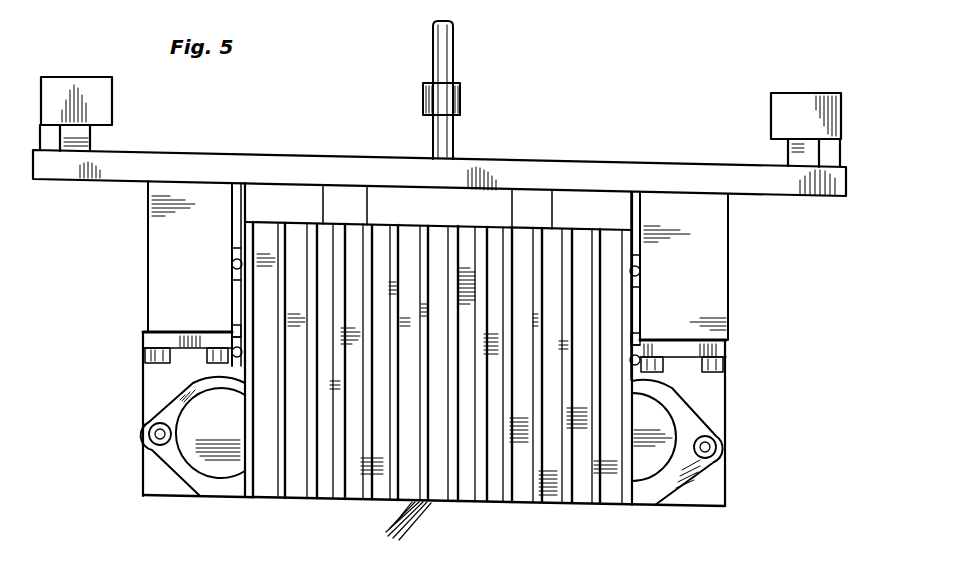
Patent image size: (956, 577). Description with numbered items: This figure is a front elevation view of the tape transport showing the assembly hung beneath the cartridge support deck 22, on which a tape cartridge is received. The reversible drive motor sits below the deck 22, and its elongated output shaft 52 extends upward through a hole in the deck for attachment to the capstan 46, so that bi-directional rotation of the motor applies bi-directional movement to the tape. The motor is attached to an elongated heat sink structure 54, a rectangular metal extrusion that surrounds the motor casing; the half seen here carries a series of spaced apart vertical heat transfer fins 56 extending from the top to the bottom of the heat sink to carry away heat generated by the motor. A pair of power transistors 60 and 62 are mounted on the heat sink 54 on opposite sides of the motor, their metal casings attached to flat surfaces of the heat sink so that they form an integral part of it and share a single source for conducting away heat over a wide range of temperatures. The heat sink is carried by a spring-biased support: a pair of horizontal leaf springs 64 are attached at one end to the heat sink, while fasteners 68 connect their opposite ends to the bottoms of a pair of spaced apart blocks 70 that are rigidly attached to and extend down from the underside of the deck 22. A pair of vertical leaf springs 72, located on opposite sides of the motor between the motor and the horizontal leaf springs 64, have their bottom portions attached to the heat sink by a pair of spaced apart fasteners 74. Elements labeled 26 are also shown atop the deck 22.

The cartridge support deck 22 is at (605, 140).
The mounting block 26 is at (100, 105).
The capstan 46 is at (452, 100).
The output shaft 52 is at (445, 52).
The heat sink structure 54 is at (322, 465).
The vertical heat transfer fins 56 is at (503, 440).
The power transistor 60 is at (648, 480).
The power transistor 62 is at (205, 462).
The leaf springs 64 is at (160, 333).
The fasteners 68 is at (212, 357).
The blocks 70 is at (160, 242).
The vertical leaf springs 72 is at (238, 295).
The fasteners 74 is at (224, 328).